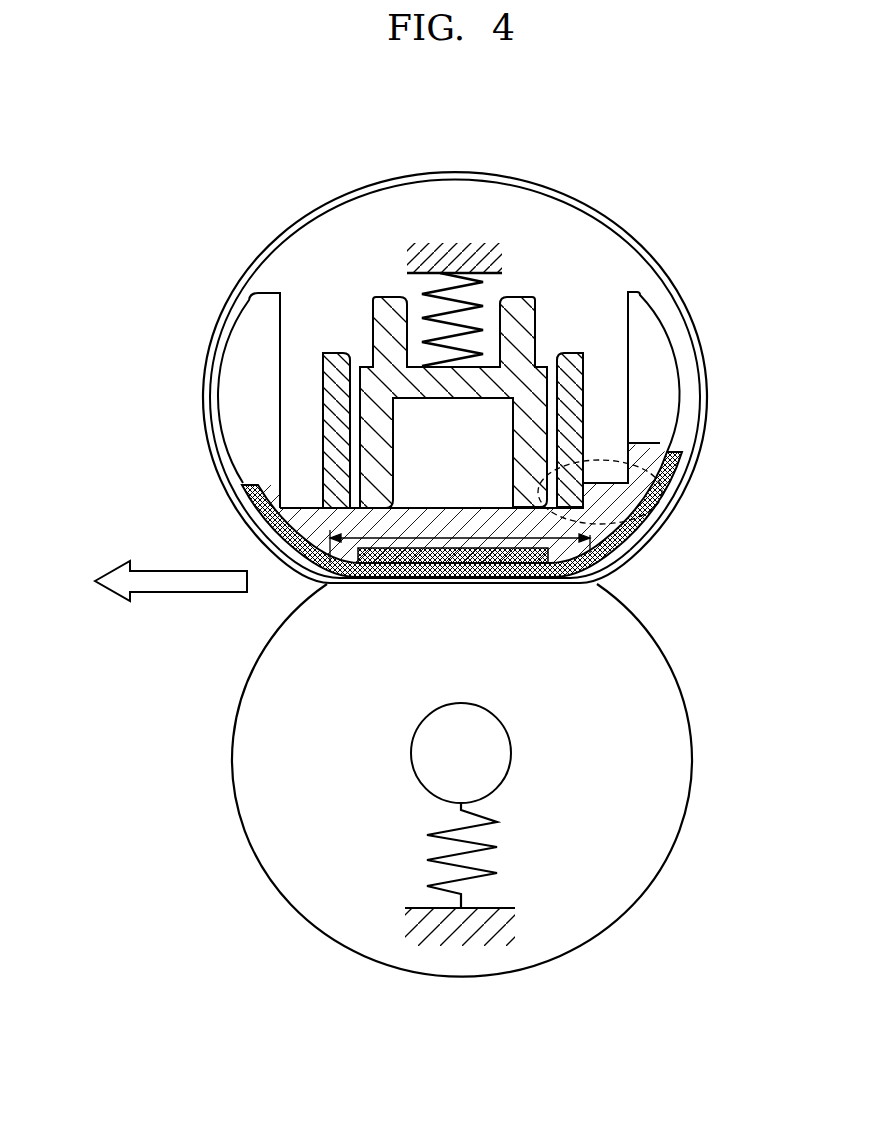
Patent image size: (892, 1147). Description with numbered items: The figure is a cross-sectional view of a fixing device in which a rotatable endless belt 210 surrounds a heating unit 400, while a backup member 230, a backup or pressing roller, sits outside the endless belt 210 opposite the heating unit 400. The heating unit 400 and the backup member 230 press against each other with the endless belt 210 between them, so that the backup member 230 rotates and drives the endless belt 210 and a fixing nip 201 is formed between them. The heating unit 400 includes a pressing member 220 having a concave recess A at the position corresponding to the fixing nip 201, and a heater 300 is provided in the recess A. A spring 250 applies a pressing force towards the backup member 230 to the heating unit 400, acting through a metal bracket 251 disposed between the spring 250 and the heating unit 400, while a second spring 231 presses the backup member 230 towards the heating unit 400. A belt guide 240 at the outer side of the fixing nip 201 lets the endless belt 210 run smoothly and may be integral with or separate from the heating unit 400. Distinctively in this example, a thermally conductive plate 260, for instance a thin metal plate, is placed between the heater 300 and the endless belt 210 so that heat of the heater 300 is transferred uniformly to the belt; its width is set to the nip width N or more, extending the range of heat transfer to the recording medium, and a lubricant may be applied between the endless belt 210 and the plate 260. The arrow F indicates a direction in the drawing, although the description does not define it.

The endless belt 210 is at (706, 394).
The pressing member 220 is at (668, 497).
The backup member 230 is at (505, 780).
The spring 231 is at (497, 833).
The belt guide 240 is at (652, 332).
The spring 250 is at (424, 290).
The metal bracket 251 is at (520, 310).
The thermally conductive plate 260 is at (625, 574).
The heater 300 is at (626, 545).
The heating unit 400 is at (526, 510).
The fixing nip 201 is at (583, 597).
The concave recess A is at (660, 462).
The width of the fixing nip N is at (460, 539).
The force direction F is at (155, 581).